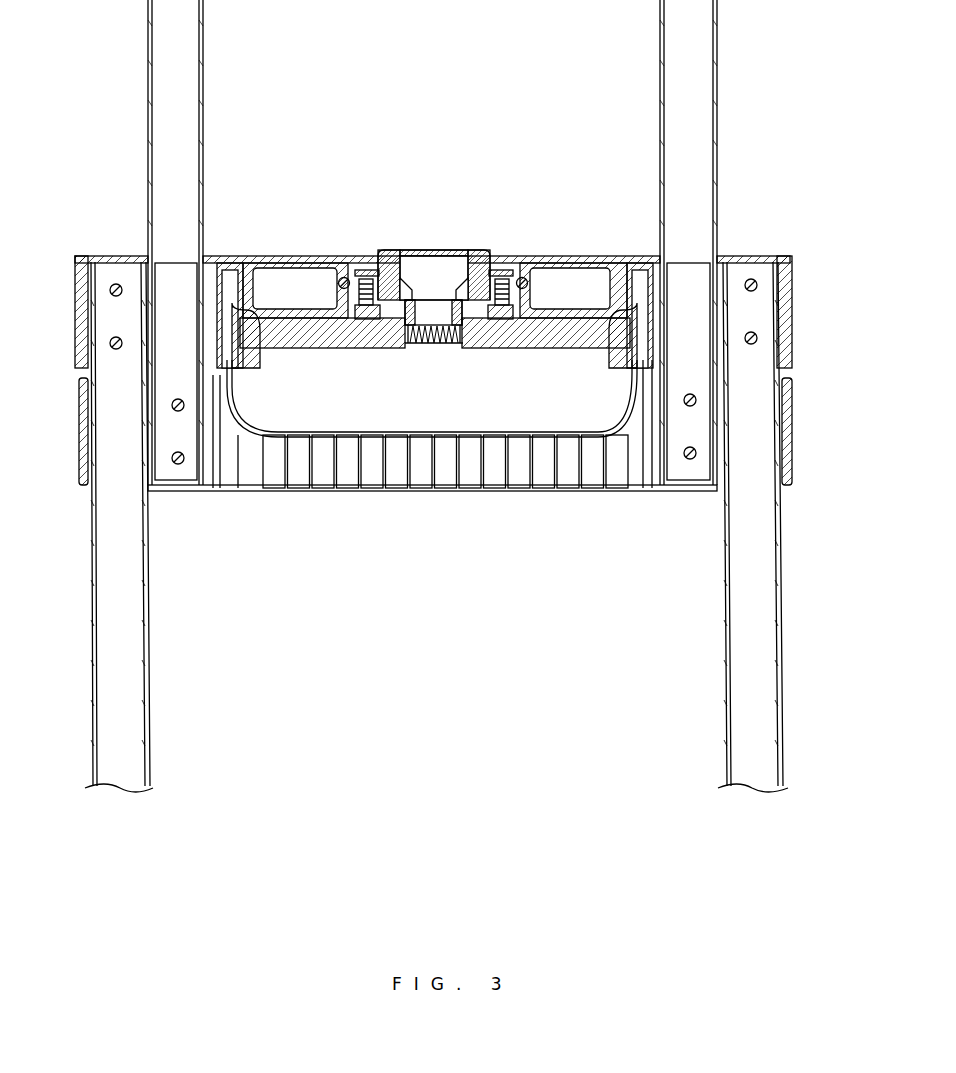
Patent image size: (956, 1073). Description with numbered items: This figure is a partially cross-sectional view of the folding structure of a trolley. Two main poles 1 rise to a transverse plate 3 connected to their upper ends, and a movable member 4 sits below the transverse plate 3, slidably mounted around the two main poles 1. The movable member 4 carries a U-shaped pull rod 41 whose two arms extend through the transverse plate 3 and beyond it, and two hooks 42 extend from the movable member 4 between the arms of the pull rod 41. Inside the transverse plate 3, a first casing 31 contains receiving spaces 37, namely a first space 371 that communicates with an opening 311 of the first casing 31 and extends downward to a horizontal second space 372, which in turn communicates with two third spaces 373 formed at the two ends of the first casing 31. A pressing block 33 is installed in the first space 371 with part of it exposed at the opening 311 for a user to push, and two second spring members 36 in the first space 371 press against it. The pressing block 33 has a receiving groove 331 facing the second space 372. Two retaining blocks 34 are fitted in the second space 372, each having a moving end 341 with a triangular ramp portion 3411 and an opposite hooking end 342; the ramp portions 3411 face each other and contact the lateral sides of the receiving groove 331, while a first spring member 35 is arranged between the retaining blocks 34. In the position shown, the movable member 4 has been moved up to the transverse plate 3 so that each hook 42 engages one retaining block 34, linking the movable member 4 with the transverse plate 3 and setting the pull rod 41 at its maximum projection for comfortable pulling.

The main pole 1 is at (128, 568).
The transverse plate 3 is at (748, 252).
The first casing 31 is at (797, 270).
The movable member 4 is at (432, 290).
The pull rod 41 is at (186, 65).
The hook 42 is at (218, 265).
The receiving space 37 is at (435, 246).
The first space 371 is at (365, 262).
The second space 372 is at (300, 265).
The third space 373 is at (233, 265).
The second spring member 36 is at (366, 272).
The pressing block 33 is at (446, 238).
The receiving groove 331 is at (432, 250).
The ramp portion 3411 is at (390, 270).
The opening 311 is at (500, 272).
The retaining block 34 is at (330, 340).
The moving end 341 is at (408, 345).
The hooking end 342 is at (256, 380).
The first spring member 35 is at (442, 348).